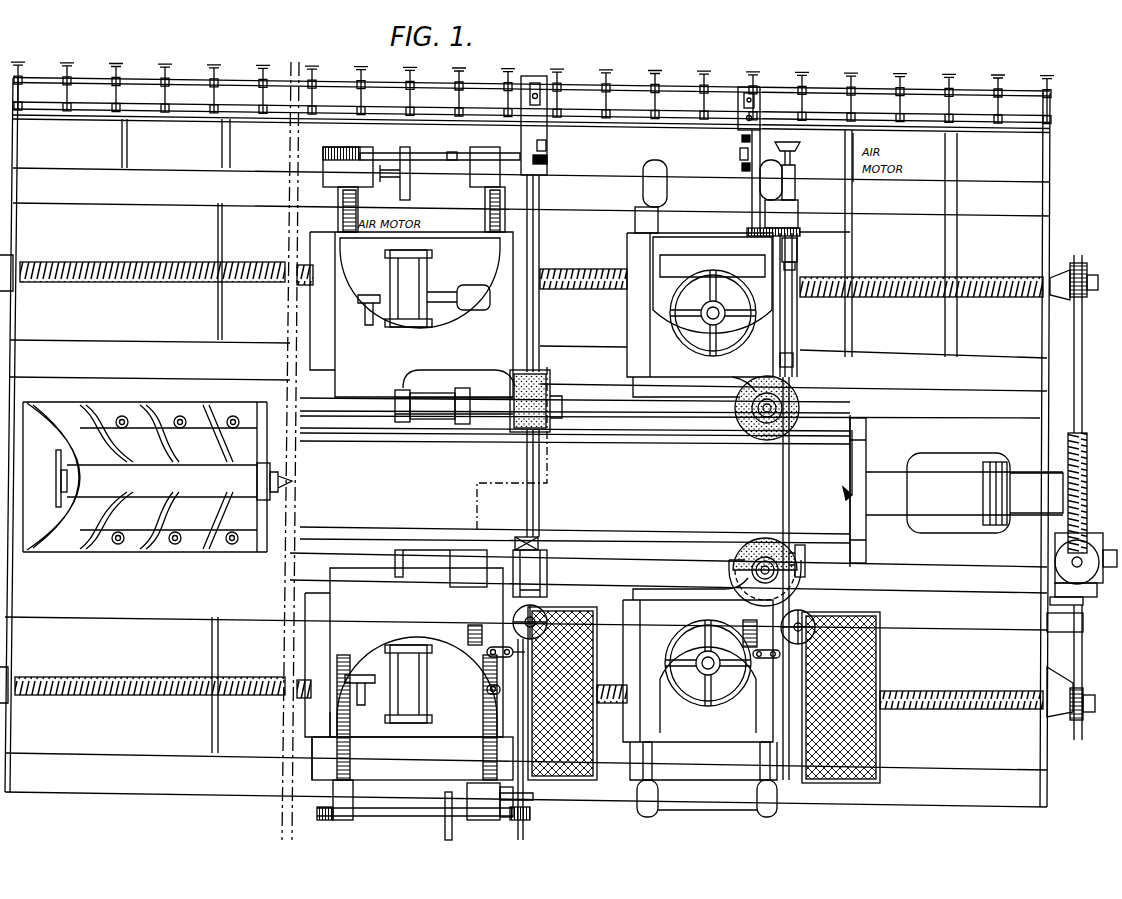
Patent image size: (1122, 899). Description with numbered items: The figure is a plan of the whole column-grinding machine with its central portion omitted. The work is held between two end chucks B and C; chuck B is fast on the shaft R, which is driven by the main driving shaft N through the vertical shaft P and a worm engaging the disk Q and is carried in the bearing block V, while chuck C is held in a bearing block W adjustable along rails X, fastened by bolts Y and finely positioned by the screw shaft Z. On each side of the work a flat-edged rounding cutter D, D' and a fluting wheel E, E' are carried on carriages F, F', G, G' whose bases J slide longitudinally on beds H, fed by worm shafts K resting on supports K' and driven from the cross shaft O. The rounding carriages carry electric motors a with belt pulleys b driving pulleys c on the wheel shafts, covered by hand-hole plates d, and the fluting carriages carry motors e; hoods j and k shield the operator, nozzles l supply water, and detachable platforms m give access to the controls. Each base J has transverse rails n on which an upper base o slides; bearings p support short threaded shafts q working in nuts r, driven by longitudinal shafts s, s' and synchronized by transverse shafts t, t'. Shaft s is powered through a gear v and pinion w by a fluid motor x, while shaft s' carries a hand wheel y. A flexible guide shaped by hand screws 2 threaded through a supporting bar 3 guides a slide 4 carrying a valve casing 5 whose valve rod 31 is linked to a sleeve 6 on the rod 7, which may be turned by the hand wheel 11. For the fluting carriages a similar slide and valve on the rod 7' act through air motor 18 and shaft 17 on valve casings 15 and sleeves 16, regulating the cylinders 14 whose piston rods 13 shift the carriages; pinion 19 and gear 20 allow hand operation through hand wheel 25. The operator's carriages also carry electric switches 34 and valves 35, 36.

The hand screws 2 is at (898, 79).
The rigid supporting bar 3 is at (668, 110).
The slide 4 is at (521, 68).
The valve casing 5 is at (548, 60).
The sleeve 6 is at (547, 159).
The rod 7 is at (551, 322).
The rod 7' is at (742, 181).
The hand wheel 11 is at (545, 612).
The piston rods 13 is at (655, 208).
The cylinders 14 is at (743, 271).
The valve casing 15 is at (797, 252).
The sleeve 16 is at (796, 266).
The shaft 17 is at (797, 320).
The air motor 18 is at (800, 152).
The pinion 19 is at (750, 232).
The gear 20 is at (850, 234).
The hand wheel 25 is at (805, 616).
The valve rod 31 is at (742, 167).
The electric switches 34 is at (474, 625).
The valve 35 is at (486, 668).
The valve 36 is at (487, 693).
The end chuck B is at (830, 481).
The end chuck C is at (291, 473).
The rounding cutter D is at (543, 423).
The rounding cutter D' is at (554, 526).
The fluting wheel E is at (752, 429).
The fluting wheel E' is at (755, 543).
The carriage F is at (411, 272).
The carriage F' is at (404, 643).
The carriage G is at (700, 315).
The carriage G' is at (701, 660).
The beds H is at (527, 487).
The carriage bases J is at (508, 469).
The worm shafts K is at (529, 478).
The supports K' is at (863, 243).
The main driving shaft N is at (1080, 607).
The cross shaft O is at (1092, 372).
The vertical shaft P is at (1072, 561).
The disk Q is at (1089, 493).
The chuck shaft R is at (938, 493).
The bearing block V is at (877, 490).
The bearing block W is at (145, 477).
The rails X is at (316, 540).
The bolts Y is at (118, 543).
The screw shaft Z is at (151, 479).
The electric motors a is at (408, 288).
The belt pulleys b is at (468, 285).
The belt pulleys c is at (470, 422).
The hand-hole plate d is at (465, 587).
The motors e is at (735, 325).
The hood j is at (547, 588).
The hood k is at (752, 592).
The nozzle l is at (800, 545).
The platform m is at (565, 762).
The rails n is at (312, 758).
The upper base o is at (297, 708).
The bearings p is at (353, 818).
The short shafts q is at (490, 200).
The nuts r is at (352, 722).
The longitudinal shaft s is at (448, 141).
The longitudinal shaft s' is at (423, 818).
The shaft t is at (503, 356).
The shaft t' is at (522, 759).
The gear v is at (361, 142).
The pinion w is at (395, 185).
The fluid-pressure operated motor x is at (421, 173).
The hand wheel y is at (445, 796).